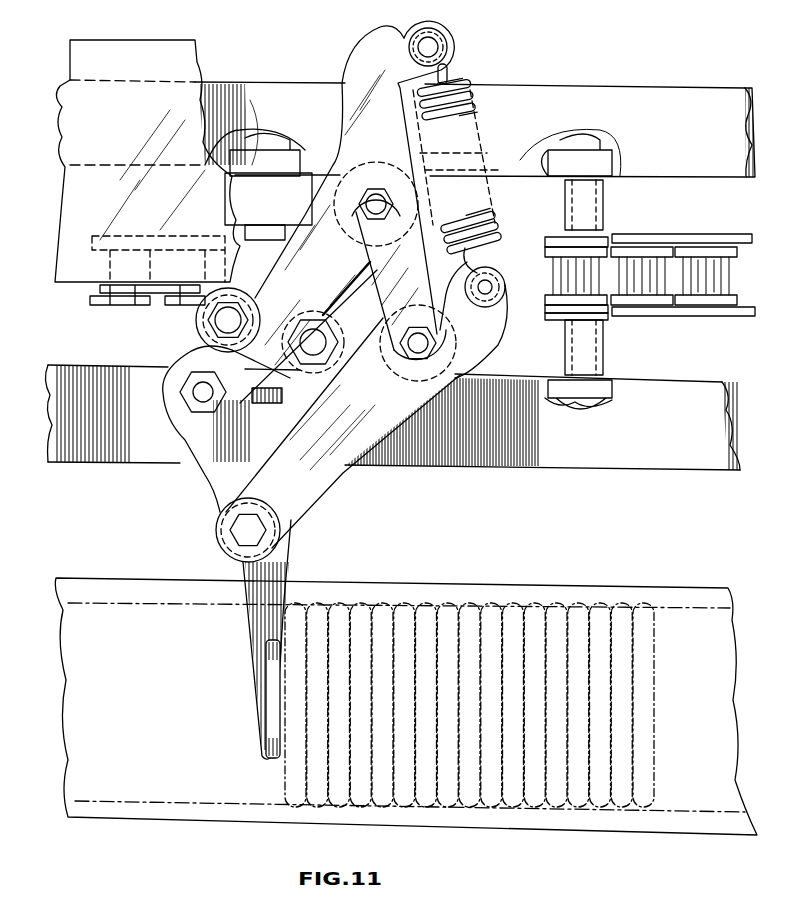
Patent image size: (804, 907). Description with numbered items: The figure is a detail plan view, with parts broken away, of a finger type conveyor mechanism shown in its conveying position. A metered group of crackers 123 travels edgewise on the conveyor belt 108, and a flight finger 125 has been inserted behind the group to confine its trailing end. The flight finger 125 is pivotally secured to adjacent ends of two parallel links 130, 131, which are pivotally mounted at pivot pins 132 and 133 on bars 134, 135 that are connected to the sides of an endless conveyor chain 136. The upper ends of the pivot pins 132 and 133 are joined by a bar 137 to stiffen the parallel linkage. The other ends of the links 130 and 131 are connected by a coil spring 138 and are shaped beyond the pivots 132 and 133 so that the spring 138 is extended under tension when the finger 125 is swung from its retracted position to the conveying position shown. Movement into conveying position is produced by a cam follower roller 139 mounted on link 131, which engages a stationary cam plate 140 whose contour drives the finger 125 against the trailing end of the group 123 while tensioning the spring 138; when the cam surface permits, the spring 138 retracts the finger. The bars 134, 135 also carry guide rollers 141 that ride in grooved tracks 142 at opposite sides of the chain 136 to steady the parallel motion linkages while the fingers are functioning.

The conveyor belt 108 is at (490, 585).
The group of crackers 123 is at (653, 712).
The flight finger 125 is at (262, 648).
The link 130 is at (320, 478).
The link 131 is at (348, 95).
The pivot pin 132 is at (420, 352).
The pivot pin 133 is at (367, 240).
The bar 134 is at (603, 358).
The bar 135 is at (603, 212).
The endless conveyor chain 136 is at (715, 318).
The bar 137 is at (378, 303).
The coil spring 138 is at (478, 100).
The cam follower roller 139 is at (196, 330).
The stationary cam plate 140 is at (67, 265).
The guide roller 141 is at (575, 400).
The grooved track 142 is at (697, 162).